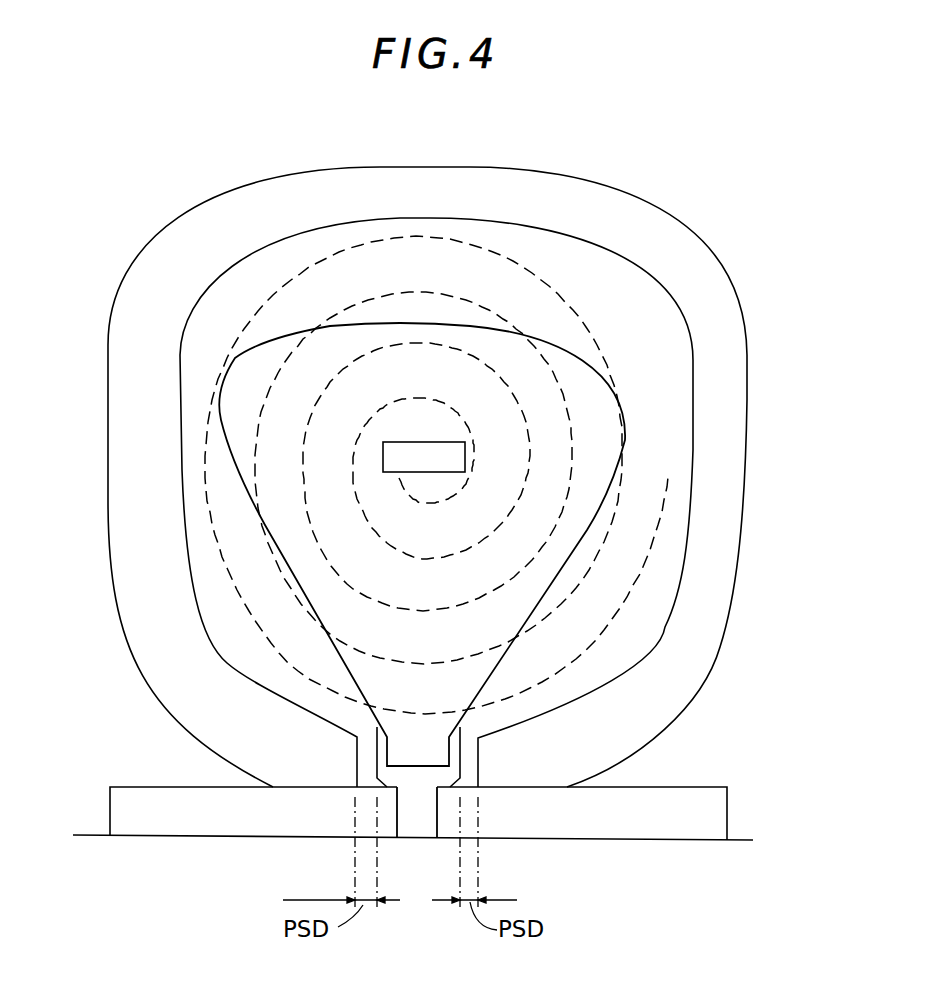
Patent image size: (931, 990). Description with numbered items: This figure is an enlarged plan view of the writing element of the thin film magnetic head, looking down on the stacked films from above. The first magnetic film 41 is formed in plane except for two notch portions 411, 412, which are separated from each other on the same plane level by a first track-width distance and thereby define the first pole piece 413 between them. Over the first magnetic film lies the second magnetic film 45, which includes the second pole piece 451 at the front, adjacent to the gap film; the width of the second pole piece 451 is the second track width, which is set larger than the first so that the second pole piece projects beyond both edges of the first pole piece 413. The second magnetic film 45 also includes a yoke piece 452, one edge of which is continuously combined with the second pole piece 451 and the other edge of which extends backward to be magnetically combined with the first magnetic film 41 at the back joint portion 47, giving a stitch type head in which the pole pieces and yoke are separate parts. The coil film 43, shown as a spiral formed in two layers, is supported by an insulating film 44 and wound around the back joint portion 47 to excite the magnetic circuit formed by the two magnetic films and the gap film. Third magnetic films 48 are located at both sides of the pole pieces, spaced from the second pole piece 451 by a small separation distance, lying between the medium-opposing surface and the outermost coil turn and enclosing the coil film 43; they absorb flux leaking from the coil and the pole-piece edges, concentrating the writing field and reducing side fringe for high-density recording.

The first magnetic film 41 is at (93, 836).
The notch portion 411 is at (238, 812).
The notch portion 412 is at (638, 813).
The first pole piece 413 is at (417, 822).
The coil film 43 is at (462, 427).
The insulating film 44 is at (542, 250).
The second magnetic film 45 is at (208, 382).
The second pole piece 451 is at (418, 839).
The yoke piece 452 is at (590, 383).
The back joint portion 47 is at (402, 455).
The third magnetic film 48 is at (383, 187).